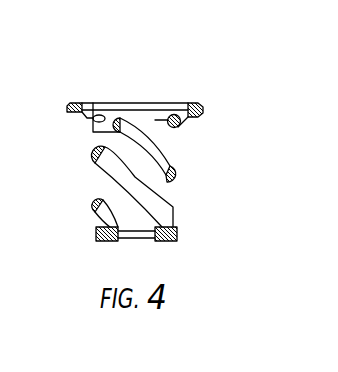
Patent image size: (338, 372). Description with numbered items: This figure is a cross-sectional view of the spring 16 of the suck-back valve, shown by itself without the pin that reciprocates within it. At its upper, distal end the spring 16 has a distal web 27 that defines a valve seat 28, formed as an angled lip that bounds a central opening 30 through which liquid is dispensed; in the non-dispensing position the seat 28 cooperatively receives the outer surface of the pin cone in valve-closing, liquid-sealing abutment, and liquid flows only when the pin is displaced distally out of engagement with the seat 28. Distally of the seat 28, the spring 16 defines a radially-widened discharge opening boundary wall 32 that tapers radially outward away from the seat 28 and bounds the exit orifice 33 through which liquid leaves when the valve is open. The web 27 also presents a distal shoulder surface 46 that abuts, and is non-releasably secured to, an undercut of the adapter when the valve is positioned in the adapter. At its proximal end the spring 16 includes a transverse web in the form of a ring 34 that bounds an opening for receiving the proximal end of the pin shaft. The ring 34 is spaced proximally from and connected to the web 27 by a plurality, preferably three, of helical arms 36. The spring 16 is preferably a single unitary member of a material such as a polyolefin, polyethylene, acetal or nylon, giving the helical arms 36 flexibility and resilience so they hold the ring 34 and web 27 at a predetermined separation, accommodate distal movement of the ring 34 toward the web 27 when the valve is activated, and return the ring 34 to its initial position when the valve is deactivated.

The spring 16 is at (130, 145).
The distal web 27 is at (185, 123).
The valve seat 28 is at (102, 110).
The central opening 30 is at (97, 118).
The discharge opening boundary wall 32 is at (183, 105).
The exit orifice 33 is at (138, 91).
The ring 34 is at (177, 233).
The helical arms 36 is at (97, 167).
The distal shoulder surface 46 is at (82, 103).